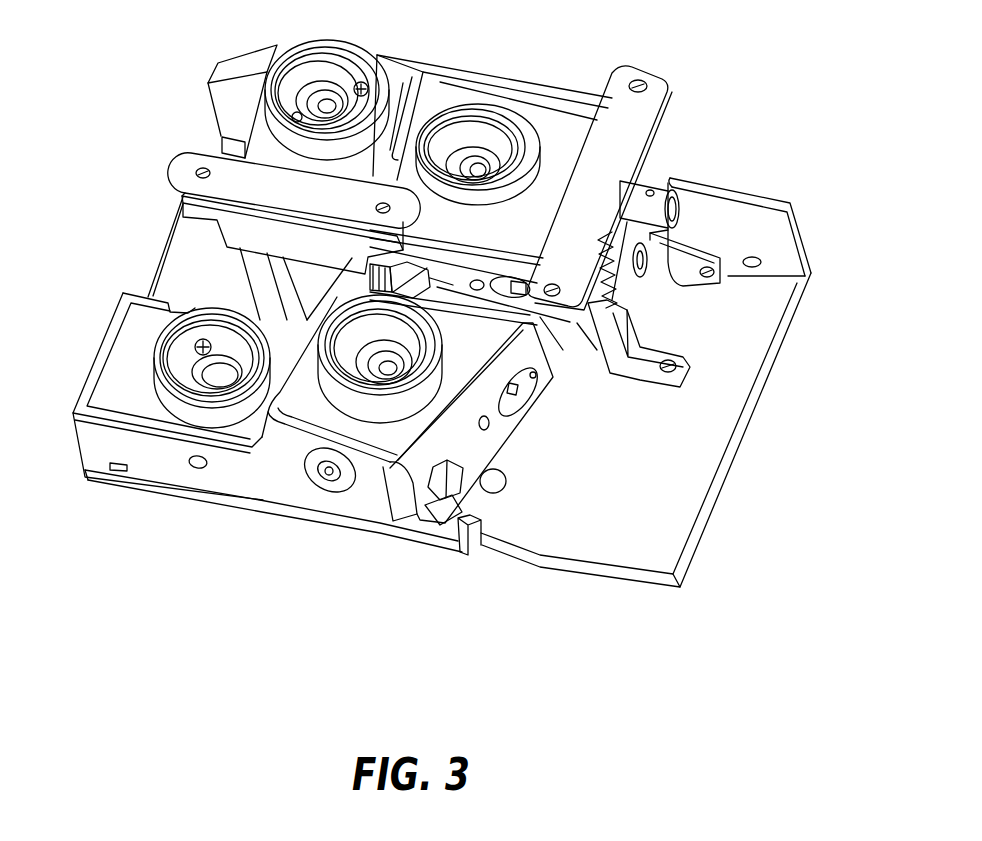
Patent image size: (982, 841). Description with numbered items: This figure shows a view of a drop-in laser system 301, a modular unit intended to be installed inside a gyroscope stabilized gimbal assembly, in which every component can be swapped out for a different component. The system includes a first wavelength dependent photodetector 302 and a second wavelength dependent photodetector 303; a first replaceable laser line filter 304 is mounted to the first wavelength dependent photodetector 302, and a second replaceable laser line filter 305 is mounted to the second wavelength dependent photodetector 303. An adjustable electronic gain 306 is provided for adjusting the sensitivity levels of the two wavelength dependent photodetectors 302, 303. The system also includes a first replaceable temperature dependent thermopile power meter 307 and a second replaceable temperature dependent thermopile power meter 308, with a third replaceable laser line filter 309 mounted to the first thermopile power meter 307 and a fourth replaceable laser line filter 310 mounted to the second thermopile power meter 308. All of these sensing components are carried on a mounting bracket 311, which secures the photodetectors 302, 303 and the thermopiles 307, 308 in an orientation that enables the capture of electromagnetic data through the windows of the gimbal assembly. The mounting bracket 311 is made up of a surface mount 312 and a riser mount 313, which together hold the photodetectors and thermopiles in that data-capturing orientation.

The drop-in laser system 301 is at (150, 232).
The first wavelength dependent photodetector 302 is at (558, 162).
The second wavelength dependent photodetector 303 is at (370, 440).
The first replaceable laser line filter 304 is at (495, 106).
The second replaceable laser line filter 305 is at (337, 393).
The adjustable electronic gain 306 is at (463, 497).
The first replaceable temperature dependent thermopile power meter 307 is at (293, 100).
The second replaceable temperature dependent thermopile power meter 308 is at (112, 387).
The third replaceable laser line filter 309 is at (287, 140).
The fourth replaceable laser line filter 310 is at (183, 413).
The mounting bracket 311 is at (748, 193).
The surface mount 312 is at (713, 400).
The riser mount 313 is at (182, 172).